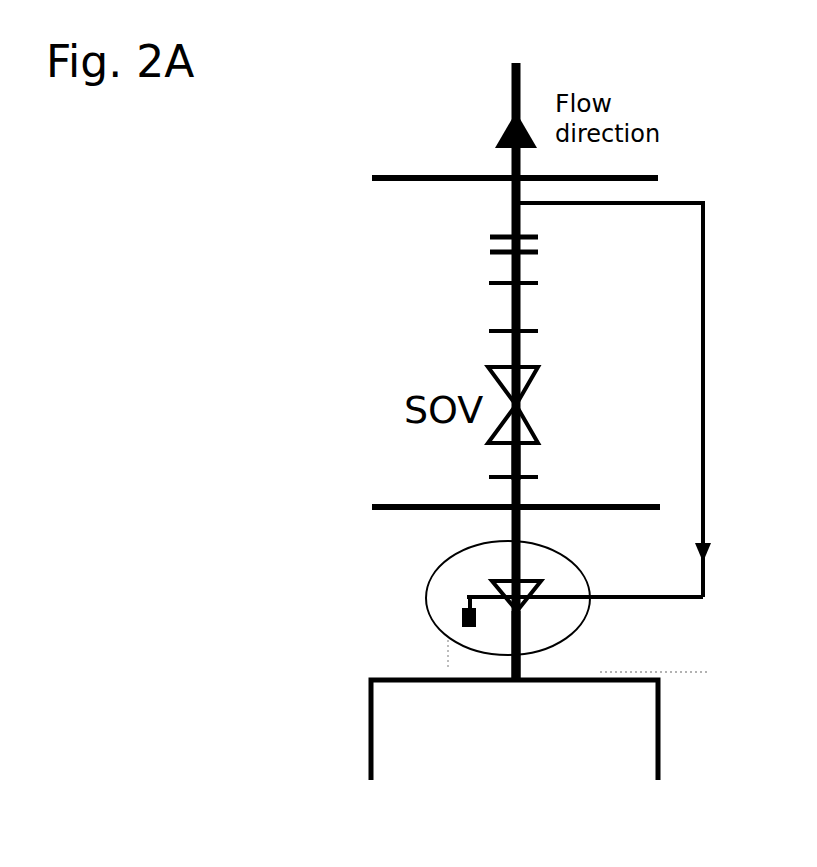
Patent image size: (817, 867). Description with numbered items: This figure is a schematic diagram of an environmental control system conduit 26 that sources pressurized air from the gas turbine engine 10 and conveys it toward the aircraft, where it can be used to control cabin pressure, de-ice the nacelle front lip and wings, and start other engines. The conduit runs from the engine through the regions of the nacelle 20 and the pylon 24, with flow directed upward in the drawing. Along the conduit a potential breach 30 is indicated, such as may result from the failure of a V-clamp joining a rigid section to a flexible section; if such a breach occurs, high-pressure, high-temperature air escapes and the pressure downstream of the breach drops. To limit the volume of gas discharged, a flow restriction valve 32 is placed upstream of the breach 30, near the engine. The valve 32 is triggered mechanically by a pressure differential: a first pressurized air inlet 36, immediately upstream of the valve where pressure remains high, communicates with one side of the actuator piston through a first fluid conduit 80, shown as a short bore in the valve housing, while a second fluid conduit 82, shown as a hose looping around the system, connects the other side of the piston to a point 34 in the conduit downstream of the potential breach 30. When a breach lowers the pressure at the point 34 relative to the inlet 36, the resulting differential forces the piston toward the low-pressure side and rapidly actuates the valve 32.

The pylon 24 is at (335, 141).
The nacelle 20 is at (335, 296).
The gas turbine engine 10 is at (362, 629).
The point in the conduit downstream of the breach 34 is at (512, 204).
The breach 30 is at (490, 253).
The environmental control system conduit 26 is at (507, 460).
The valve 32 is at (495, 585).
The first fluid conduit 80 is at (466, 610).
The first pressurized air inlet 36 is at (512, 634).
The second fluid conduit 82 is at (706, 519).